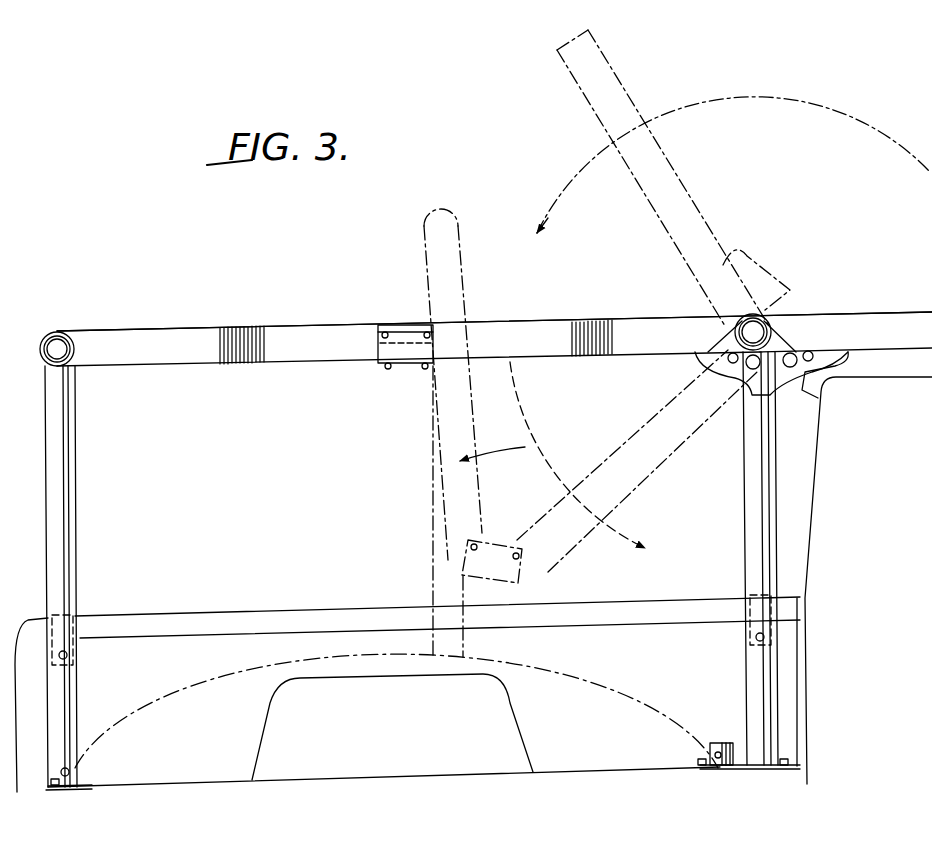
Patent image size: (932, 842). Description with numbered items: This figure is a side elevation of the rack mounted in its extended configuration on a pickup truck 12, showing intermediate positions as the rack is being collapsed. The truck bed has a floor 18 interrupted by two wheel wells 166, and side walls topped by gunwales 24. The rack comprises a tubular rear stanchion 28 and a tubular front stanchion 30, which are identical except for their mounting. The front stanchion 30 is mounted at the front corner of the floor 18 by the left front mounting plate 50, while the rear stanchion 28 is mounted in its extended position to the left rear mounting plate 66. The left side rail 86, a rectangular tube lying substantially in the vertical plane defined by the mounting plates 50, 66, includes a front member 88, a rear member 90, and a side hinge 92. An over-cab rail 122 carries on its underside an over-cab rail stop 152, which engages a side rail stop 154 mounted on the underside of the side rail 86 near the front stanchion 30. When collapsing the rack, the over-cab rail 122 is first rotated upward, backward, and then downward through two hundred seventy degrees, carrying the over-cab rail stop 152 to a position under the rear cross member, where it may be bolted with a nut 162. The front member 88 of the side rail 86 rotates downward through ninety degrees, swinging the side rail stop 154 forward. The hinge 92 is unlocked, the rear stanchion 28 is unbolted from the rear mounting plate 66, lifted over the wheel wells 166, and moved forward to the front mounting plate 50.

The pickup truck 12 is at (473, 532).
The floor 18 is at (640, 752).
The gunwales 24 is at (332, 612).
The rear stanchion 28 is at (80, 557).
The front stanchion 30 is at (746, 528).
The left front mounting plate 50 is at (740, 769).
The left rear mounting plate 66 is at (78, 790).
The left side rail 86 is at (405, 316).
The front member 88 is at (590, 322).
The rear member 90 is at (243, 328).
The side hinge 92 is at (382, 352).
The over-cab rail 122 is at (666, 147).
The over-cab rail stop 152 is at (770, 281).
The side rail stop 154 is at (703, 371).
The nut 162 is at (717, 742).
The wheel wells 166 is at (393, 739).